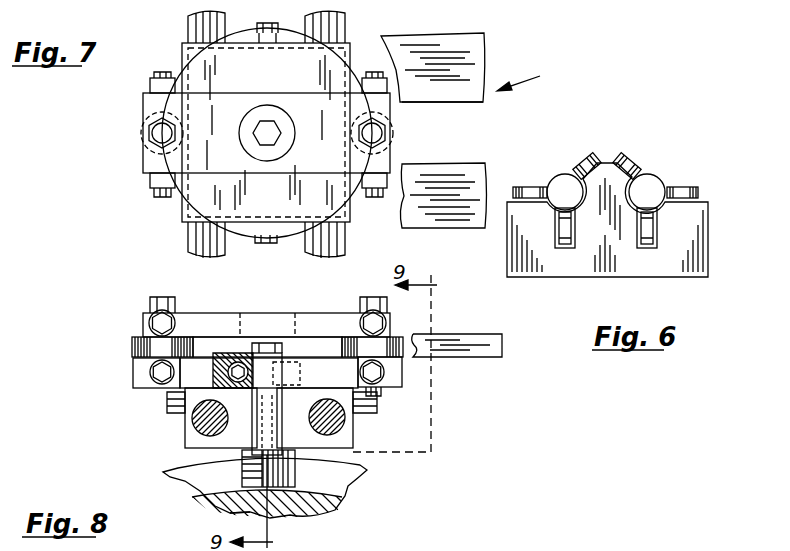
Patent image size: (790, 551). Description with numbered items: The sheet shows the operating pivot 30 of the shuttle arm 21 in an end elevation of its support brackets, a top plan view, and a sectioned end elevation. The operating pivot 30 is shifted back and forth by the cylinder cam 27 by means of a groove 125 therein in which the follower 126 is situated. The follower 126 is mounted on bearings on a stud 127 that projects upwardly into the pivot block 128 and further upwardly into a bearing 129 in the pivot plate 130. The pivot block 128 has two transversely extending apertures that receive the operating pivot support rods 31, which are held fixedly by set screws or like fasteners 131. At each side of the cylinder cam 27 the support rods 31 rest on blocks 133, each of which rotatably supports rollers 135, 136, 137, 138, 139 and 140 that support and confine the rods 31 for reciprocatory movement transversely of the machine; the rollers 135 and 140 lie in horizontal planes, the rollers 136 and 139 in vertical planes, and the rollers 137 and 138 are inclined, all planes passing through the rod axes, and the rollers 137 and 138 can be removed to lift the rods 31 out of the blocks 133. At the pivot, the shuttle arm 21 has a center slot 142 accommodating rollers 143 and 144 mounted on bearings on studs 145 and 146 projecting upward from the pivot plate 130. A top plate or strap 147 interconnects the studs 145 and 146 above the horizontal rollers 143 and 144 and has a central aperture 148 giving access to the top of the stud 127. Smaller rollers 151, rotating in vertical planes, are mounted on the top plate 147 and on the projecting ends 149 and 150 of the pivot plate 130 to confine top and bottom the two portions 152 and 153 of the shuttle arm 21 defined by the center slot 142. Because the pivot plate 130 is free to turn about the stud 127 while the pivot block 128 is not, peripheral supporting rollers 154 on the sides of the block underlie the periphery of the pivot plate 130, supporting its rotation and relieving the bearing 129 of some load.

In FIG. 7, the shuttle arm 21 is at (532, 72).
In FIG. 8, the cylinder cam 27 is at (305, 510).
In FIG. 7, the operating pivot 30 is at (160, 219).
In FIG. 7, the operating pivot support rods 31 is at (200, 240).
In FIG. 6, the operating pivot support rods 31 is at (562, 183).
In FIG. 8, the operating pivot support rods 31 is at (196, 426).
In FIG. 8, the groove 125 is at (338, 490).
In FIG. 8, the follower 126 is at (295, 470).
In FIG. 8, the stud 127 is at (242, 470).
In FIG. 8, the pivot block 128 is at (190, 448).
In FIG. 8, the bearing 129 is at (236, 360).
In FIG. 8, the pivot plate 130 is at (320, 372).
In FIG. 8, the set screws or like fasteners 131 is at (370, 400).
In FIG. 6, the blocks 133 is at (695, 262).
In FIG. 6, the roller 135 is at (527, 187).
In FIG. 6, the roller 136 is at (570, 231).
In FIG. 6, the roller 137 is at (583, 160).
In FIG. 6, the roller 138 is at (631, 160).
In FIG. 6, the roller 139 is at (652, 231).
In FIG. 6, the roller 140 is at (690, 187).
In FIG. 7, the center slot 142 is at (437, 103).
In FIG. 7, the roller 143 is at (145, 133).
In FIG. 8, the roller 143 is at (132, 345).
In FIG. 7, the roller 144 is at (392, 133).
In FIG. 8, the roller 144 is at (397, 337).
In FIG. 8, the stud 145 is at (162, 297).
In FIG. 8, the stud 146 is at (368, 300).
In FIG. 8, the top plate or strap 147 is at (196, 322).
In FIG. 7, the central aperture 148 is at (268, 160).
In FIG. 8, the central aperture 148 is at (254, 320).
In FIG. 8, the projecting end 149 is at (134, 380).
In FIG. 8, the projecting end 150 is at (402, 373).
In FIG. 7, the rollers 151 is at (150, 85).
In FIG. 8, the rollers 151 is at (382, 389).
In FIG. 7, the portion of shuttle arm 152 is at (470, 66).
In FIG. 7, the portion of shuttle arm 153 is at (470, 216).
In FIG. 7, the peripheral supporting rollers 154 is at (263, 36).
In FIG. 8, the peripheral supporting rollers 154 is at (167, 406).